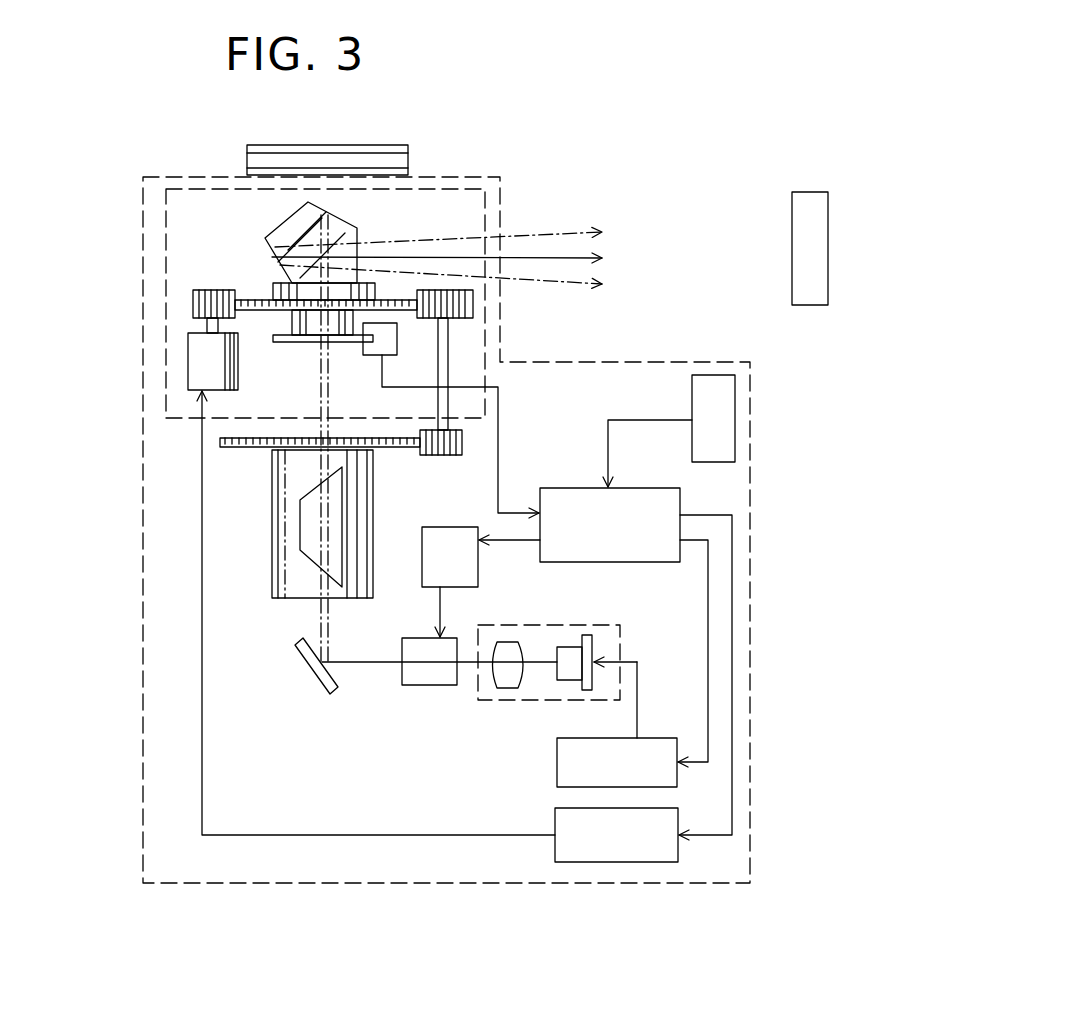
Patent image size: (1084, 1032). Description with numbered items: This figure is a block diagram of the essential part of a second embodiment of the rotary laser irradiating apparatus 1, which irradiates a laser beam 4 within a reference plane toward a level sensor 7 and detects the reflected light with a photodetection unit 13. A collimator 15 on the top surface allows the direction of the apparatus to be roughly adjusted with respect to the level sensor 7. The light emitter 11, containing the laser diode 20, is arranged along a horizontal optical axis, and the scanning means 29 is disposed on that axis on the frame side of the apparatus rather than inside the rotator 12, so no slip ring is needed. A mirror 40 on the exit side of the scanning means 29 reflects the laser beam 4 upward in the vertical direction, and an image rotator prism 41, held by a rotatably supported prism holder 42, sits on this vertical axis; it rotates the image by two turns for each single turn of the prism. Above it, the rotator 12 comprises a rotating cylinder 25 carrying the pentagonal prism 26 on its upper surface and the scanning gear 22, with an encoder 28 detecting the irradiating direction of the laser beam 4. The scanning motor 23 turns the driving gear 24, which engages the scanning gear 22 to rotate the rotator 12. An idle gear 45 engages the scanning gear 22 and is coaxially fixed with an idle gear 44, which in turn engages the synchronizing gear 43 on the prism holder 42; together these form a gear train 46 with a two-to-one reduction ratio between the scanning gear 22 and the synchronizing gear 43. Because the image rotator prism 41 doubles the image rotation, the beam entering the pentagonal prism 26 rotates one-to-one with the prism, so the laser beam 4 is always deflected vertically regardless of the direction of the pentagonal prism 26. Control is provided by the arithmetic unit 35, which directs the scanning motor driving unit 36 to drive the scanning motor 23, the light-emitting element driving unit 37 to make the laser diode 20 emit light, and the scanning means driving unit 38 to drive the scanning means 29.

The rotary laser irradiating apparatus 1 is at (509, 213).
The laser beam 4 is at (577, 255).
The level sensor 7 is at (792, 257).
The light emitter 11 is at (620, 636).
The rotator 12 is at (166, 261).
The photodetection unit 13 is at (707, 375).
The collimator 15 is at (392, 145).
The laser diode 20 is at (567, 682).
The scanning gear 22 is at (397, 300).
The scanning motor 23 is at (188, 358).
The driving gear 24 is at (193, 302).
The rotating cylinder 25 is at (273, 294).
The pentagonal prism 26 is at (283, 243).
The encoder 28 is at (370, 357).
The scanning means 29 is at (413, 686).
The arithmetic unit 35 is at (617, 562).
The scanning motor driving unit 36 is at (665, 808).
The light-emitting element driving unit 37 is at (665, 738).
The scanning means driving unit 38 is at (458, 527).
The mirror 40 is at (325, 690).
The image rotator prism 41 is at (300, 530).
The prism holder 42 is at (272, 508).
The synchronizing gear 43 is at (218, 440).
The idle gear 44 is at (463, 441).
The idle gear 45 is at (473, 303).
The gear train 46 is at (463, 352).